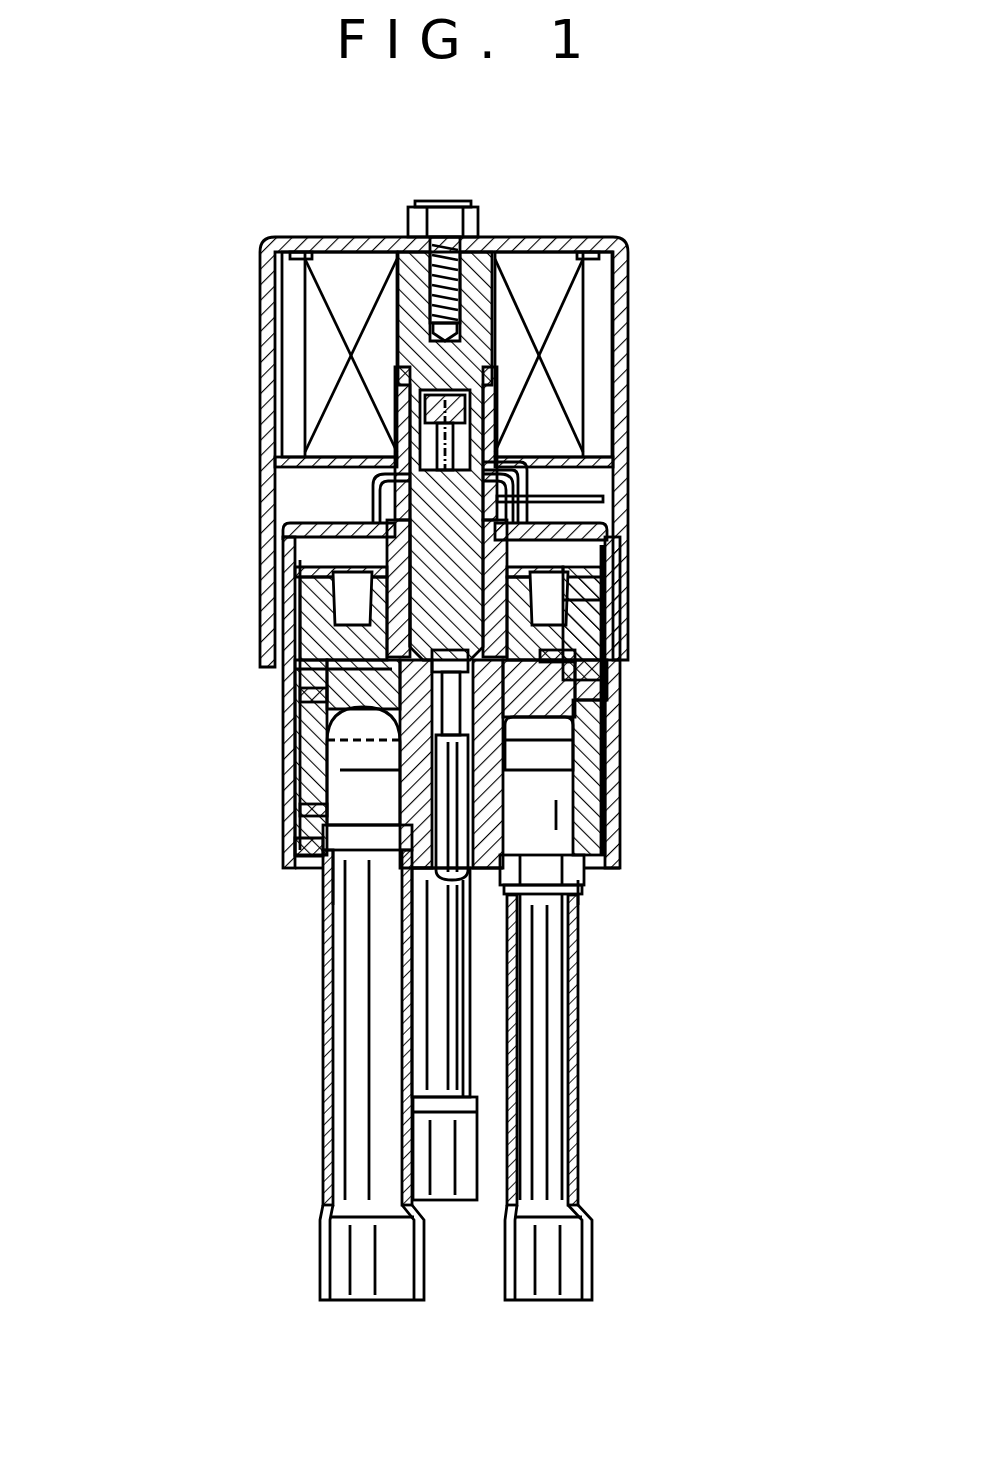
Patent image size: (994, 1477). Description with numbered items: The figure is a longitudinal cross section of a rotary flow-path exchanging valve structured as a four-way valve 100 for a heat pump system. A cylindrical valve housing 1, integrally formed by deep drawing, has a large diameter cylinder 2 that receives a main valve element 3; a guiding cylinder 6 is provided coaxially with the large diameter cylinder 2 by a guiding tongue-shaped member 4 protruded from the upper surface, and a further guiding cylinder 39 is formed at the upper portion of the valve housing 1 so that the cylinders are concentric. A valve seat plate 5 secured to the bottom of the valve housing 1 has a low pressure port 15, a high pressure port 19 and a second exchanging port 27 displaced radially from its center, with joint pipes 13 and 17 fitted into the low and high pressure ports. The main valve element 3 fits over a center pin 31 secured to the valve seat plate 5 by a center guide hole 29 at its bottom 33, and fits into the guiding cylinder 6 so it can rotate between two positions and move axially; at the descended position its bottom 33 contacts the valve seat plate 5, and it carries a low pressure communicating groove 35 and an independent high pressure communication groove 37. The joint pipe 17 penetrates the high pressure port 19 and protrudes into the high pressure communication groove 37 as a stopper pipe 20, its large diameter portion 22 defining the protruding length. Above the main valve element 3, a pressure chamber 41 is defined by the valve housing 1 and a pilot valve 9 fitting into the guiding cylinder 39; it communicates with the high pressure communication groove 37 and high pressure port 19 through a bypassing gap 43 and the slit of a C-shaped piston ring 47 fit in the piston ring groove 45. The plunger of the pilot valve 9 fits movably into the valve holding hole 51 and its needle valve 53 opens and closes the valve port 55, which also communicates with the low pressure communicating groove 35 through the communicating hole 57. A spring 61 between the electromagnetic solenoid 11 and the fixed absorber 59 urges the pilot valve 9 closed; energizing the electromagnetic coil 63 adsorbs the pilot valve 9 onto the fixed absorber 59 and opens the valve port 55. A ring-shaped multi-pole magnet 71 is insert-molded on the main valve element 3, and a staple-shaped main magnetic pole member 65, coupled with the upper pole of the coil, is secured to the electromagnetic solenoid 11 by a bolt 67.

The four-way valve 100 is at (655, 412).
The valve housing 1 is at (638, 715).
The large diameter cylinder 2 is at (606, 818).
The main valve element 3 is at (600, 793).
The guiding tongue-shaped member 4 is at (320, 556).
The valve seat plate 5 is at (590, 853).
The guiding cylinder 6 is at (545, 500).
The pilot valve 9 is at (565, 529).
The electromagnetic solenoid 11 is at (600, 350).
The joint pipe 13 is at (345, 1100).
The low pressure port 15 is at (348, 857).
The joint pipe 17 is at (565, 1085).
The high pressure port 19 is at (572, 890).
The stopper pipe 20 is at (552, 800).
The large diameter portion 22 is at (300, 845).
The second exchanging port 27 is at (435, 1200).
The center guide hole 29 is at (300, 815).
The center pin 31 is at (445, 880).
The bottom 33 is at (345, 848).
The low pressure communicating groove 35 is at (330, 775).
The high pressure communication groove 37 is at (560, 746).
The guiding cylinder 39 is at (405, 406).
The pressure chamber 41 is at (575, 555).
The bypassing gap 43 is at (605, 868).
The piston ring groove 45 is at (607, 668).
The C-shaped piston ring 47 is at (562, 660).
The valve holding hole 51 is at (428, 588).
The needle valve 53 is at (300, 665).
The valve port 55 is at (300, 712).
The communicating hole 57 is at (327, 741).
The fixed absorber 59 is at (403, 288).
The spring 61 is at (443, 485).
The electromagnetic coil 63 is at (533, 262).
The main magnetic pole member 65 is at (622, 268).
The bolt 67 is at (443, 205).
The multi-pole magnet 71 is at (580, 600).